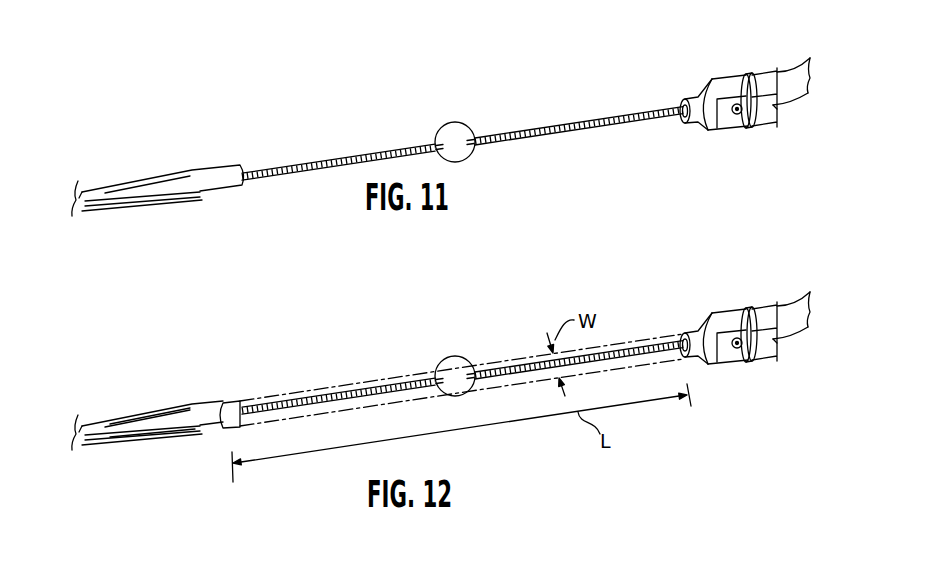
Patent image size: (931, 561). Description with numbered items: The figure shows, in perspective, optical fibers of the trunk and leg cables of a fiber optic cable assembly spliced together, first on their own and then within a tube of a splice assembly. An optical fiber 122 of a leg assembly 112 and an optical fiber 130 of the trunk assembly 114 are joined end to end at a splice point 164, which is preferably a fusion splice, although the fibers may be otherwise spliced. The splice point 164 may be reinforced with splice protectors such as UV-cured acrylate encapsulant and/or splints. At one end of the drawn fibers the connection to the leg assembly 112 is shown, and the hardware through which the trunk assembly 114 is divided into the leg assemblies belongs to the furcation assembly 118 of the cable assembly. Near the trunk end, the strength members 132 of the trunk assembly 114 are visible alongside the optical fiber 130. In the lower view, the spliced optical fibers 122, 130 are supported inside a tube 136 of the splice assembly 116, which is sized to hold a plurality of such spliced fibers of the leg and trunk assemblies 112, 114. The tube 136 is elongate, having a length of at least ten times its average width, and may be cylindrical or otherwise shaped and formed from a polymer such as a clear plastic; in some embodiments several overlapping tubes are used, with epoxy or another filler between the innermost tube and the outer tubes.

In FIG. 11, the leg assembly 112 is at (801, 71).
In FIG. 12, the leg assembly 112 is at (800, 307).
In FIG. 11, the trunk assembly 114 is at (95, 197).
In FIG. 12, the trunk assembly 114 is at (87, 440).
In FIG. 12, the splice assembly 116 is at (480, 350).
In FIG. 11, the furcation assembly 118 is at (731, 61).
In FIG. 12, the furcation assembly 118 is at (731, 295).
In FIG. 11, the optical fiber 122 is at (573, 123).
In FIG. 12, the optical fiber 122 is at (626, 348).
In FIG. 11, the optical fibers 130 is at (326, 162).
In FIG. 12, the optical fibers 130 is at (378, 388).
In FIG. 12, the strength members 132 is at (160, 409).
In FIG. 12, the tube 136 is at (300, 394).
In FIG. 11, the splice point 164 is at (461, 123).
In FIG. 12, the splice point 164 is at (462, 357).